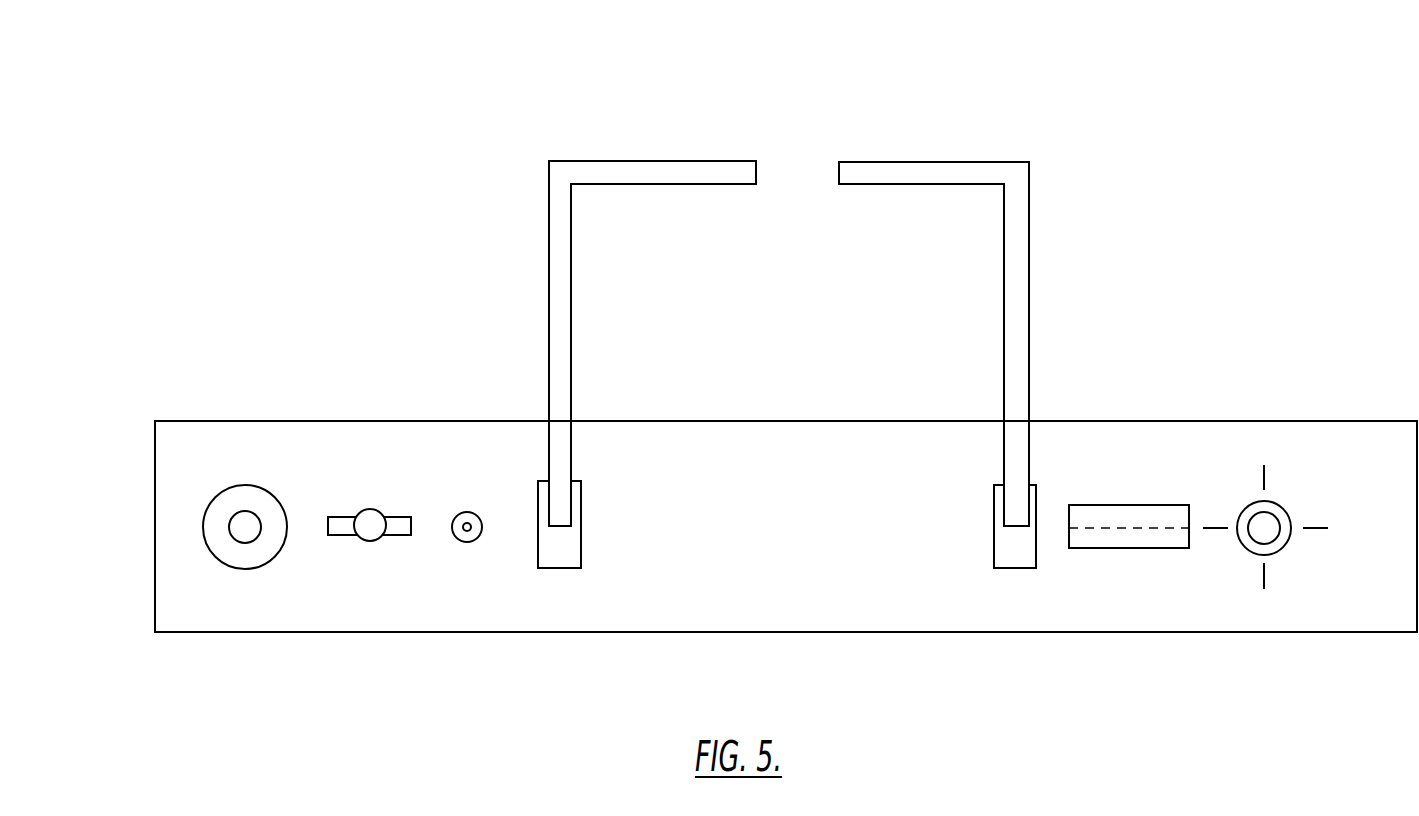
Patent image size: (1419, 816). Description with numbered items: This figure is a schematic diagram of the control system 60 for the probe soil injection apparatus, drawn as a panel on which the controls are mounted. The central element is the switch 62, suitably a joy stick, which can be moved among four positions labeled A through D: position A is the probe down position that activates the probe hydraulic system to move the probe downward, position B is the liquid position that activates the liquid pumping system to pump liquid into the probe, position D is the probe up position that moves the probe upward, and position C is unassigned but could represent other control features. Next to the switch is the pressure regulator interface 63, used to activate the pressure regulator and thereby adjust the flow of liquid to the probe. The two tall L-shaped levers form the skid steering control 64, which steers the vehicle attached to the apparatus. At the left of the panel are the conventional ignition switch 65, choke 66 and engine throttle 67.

The control system 60 is at (778, 73).
The switch 62 is at (1287, 547).
The pressure regulator interface 63 is at (1155, 549).
The skid steering control 64 is at (1030, 304).
The ignition switch 65 is at (468, 512).
The choke 66 is at (370, 541).
The engine throttle 67 is at (247, 484).